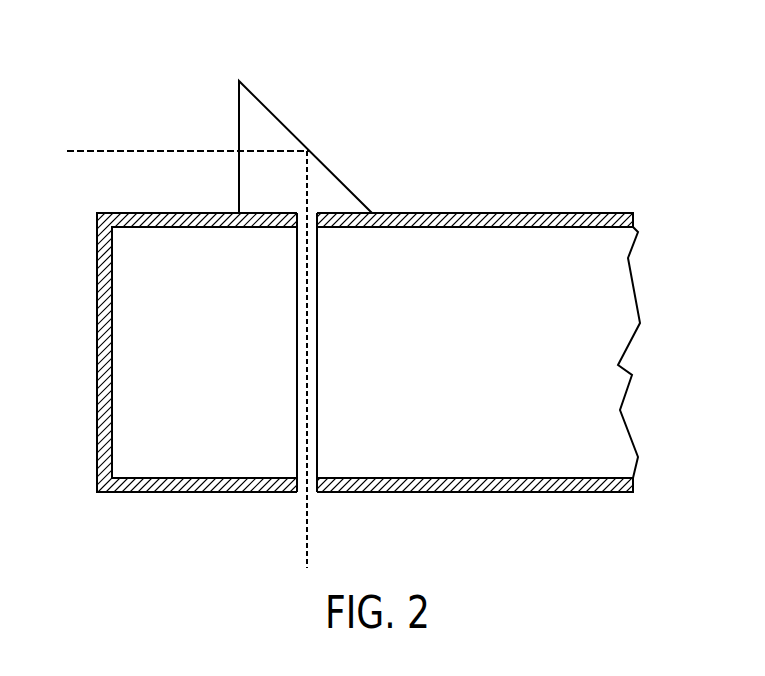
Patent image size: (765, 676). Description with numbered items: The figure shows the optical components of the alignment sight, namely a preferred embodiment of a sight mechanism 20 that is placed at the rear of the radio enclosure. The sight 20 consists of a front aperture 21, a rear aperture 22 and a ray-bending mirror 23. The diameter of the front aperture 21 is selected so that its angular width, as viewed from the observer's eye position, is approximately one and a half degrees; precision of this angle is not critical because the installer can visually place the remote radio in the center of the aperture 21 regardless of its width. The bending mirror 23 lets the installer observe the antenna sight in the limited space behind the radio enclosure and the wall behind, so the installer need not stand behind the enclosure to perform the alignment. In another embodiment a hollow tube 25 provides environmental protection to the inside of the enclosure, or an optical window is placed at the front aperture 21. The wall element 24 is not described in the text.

The sight mechanism 20 is at (382, 316).
The front aperture 21 is at (297, 501).
The rear aperture 22 is at (306, 212).
The ray-bending mirror 23 is at (296, 138).
The housing wall 24 is at (97, 337).
The hollow tube 25 is at (317, 387).